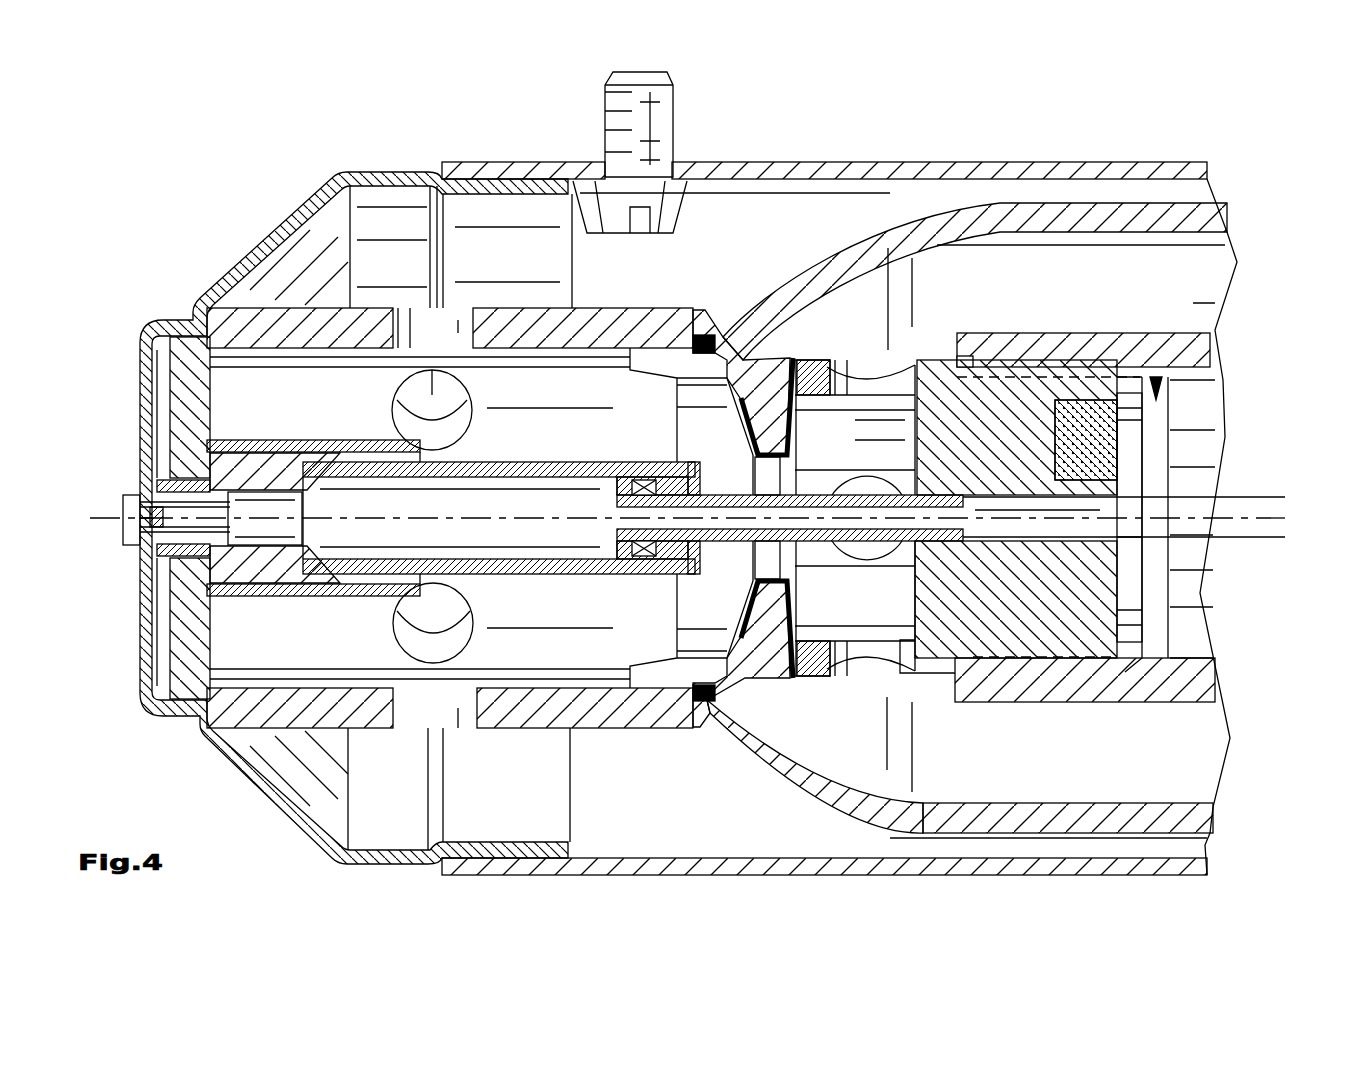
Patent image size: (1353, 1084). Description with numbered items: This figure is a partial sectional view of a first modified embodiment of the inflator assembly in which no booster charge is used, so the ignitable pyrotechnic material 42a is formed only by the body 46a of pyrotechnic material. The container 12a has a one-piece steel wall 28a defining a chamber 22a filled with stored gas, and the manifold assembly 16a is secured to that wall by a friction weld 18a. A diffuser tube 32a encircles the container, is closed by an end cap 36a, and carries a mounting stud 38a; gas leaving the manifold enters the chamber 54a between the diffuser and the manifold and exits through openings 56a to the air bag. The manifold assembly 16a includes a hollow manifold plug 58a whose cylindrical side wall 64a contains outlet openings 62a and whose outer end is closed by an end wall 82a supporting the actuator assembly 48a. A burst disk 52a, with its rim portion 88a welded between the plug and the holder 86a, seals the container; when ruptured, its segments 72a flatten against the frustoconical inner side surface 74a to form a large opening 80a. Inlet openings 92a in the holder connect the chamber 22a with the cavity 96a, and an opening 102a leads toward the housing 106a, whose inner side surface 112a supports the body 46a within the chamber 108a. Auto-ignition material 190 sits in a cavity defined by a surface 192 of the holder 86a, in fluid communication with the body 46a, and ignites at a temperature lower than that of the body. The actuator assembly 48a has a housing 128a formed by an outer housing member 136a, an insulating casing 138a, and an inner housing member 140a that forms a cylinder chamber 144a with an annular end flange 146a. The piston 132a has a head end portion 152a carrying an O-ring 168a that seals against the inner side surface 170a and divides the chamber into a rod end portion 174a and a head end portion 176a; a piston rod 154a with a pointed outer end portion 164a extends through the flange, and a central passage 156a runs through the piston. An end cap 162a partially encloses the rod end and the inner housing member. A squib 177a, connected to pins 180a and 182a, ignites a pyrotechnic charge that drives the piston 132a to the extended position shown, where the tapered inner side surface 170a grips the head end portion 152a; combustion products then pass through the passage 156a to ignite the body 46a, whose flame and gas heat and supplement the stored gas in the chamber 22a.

The container 12a is at (737, 273).
The manifold assembly 16a is at (250, 732).
The friction weld 18a is at (705, 735).
The chamber 22a is at (930, 777).
The one-piece steel wall 28a is at (770, 770).
The diffuser tube 32a is at (822, 172).
The end cap 36a is at (283, 233).
The mounting stud 38a is at (655, 125).
The ignitable pyrotechnic material 42a is at (1156, 375).
The body of pyrotechnic material 46a is at (1202, 404).
The actuator assembly 48a is at (315, 438).
The burst disk 52a is at (825, 672).
The chamber 54a is at (292, 290).
The openings 56a is at (980, 863).
The manifold plug 58a is at (305, 735).
The outlet openings 62a is at (430, 395).
The cylindrical side wall 64a is at (525, 330).
The segments 72a is at (755, 600).
The frustoconical inner side surface 74a is at (723, 700).
The opening 80a is at (762, 562).
The end wall 82a is at (187, 658).
The holder 86a is at (813, 352).
The rim portion 88a is at (798, 612).
The inlet openings 92a is at (872, 380).
The cavity 96a is at (878, 385).
The opening 102a is at (1095, 507).
The housing 106a is at (1022, 690).
The chamber 108a is at (1153, 642).
The inner side surface 112a is at (1183, 657).
The housing 128a is at (375, 438).
The piston 132a is at (808, 545).
The outer housing member 136a is at (237, 447).
The casing 138a is at (247, 467).
The inner housing member 140a is at (508, 455).
The cylinder chamber 144a is at (463, 537).
The annular end flange 146a is at (697, 468).
The head end portion 152a is at (618, 488).
The piston rod 154a is at (812, 493).
The central passage 156a is at (905, 395).
The end cap 162a is at (573, 578).
The outer end portion 164a is at (970, 468).
The O-ring 168a is at (625, 552).
The inner side surface 170a is at (398, 566).
The rod end portion 174a is at (670, 460).
The head end portion 176a is at (298, 577).
The squib 177a is at (213, 580).
The pin 180a is at (135, 500).
The pin 182a is at (137, 538).
The auto-ignition material 190 is at (1100, 462).
The surface 192 is at (1105, 408).